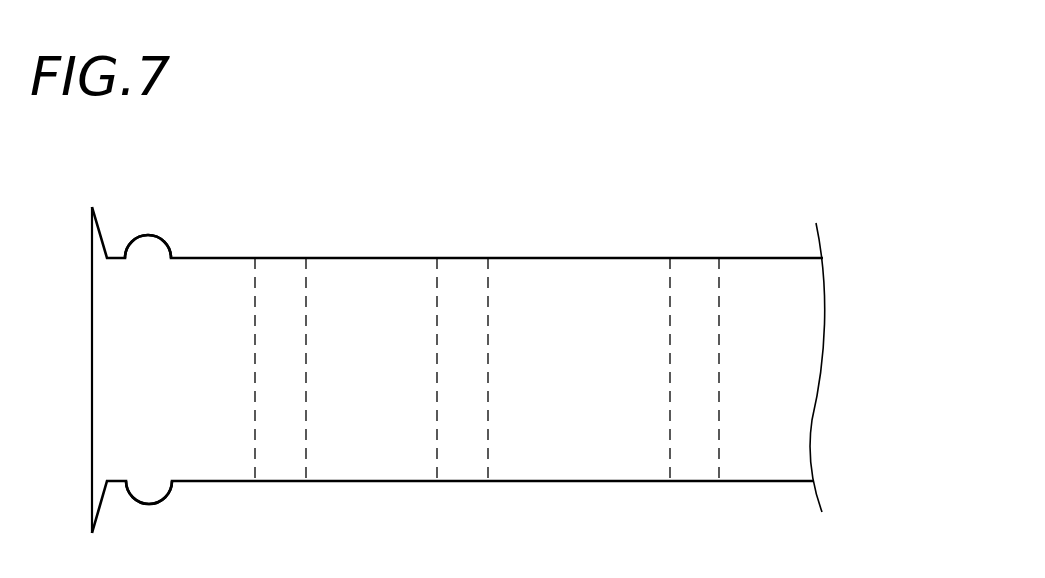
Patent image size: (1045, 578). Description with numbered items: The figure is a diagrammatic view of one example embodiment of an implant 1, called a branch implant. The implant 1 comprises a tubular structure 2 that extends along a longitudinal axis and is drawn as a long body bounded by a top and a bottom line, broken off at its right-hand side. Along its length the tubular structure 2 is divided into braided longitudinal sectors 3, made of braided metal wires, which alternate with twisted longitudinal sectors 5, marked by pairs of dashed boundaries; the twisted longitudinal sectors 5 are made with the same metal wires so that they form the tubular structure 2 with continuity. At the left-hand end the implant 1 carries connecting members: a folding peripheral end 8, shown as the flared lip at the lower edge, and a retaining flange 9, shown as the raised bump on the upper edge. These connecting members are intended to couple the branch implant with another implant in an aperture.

The implant 1 is at (866, 312).
The tubular structure 2 is at (581, 393).
The braided longitudinal sectors 3 is at (212, 277).
The twisted longitudinal sectors 5 is at (270, 277).
The folding peripheral end 8 is at (116, 517).
The retaining flange 9 is at (163, 222).